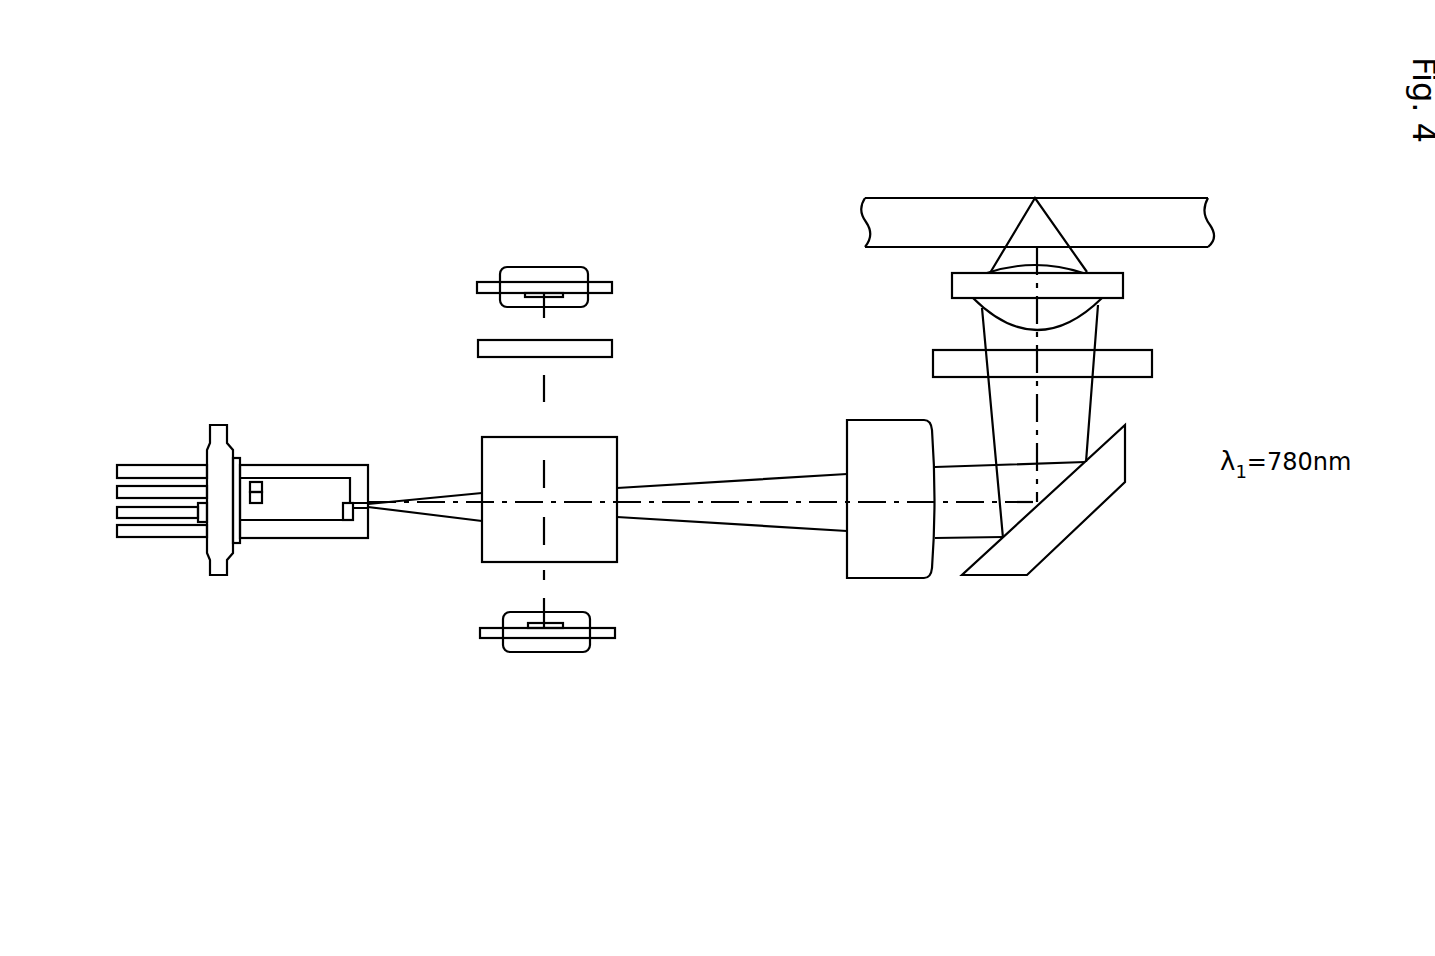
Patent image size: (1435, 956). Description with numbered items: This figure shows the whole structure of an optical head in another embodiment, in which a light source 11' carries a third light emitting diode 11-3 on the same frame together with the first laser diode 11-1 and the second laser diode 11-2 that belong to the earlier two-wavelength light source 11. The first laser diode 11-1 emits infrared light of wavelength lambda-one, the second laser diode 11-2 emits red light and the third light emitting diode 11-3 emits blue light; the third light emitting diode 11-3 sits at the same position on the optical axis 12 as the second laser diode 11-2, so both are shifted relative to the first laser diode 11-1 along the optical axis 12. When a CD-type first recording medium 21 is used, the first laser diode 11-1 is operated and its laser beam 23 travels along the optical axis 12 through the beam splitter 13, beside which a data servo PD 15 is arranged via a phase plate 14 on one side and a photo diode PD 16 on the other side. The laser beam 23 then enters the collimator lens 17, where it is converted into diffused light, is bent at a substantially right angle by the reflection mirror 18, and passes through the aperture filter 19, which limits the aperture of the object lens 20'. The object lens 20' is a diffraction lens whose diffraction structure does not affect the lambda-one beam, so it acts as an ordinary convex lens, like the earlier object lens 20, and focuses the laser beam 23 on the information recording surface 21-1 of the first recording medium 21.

The light source 11 is at (242, 533).
The light source 11' is at (242, 533).
The first laser diode 11-1 is at (346, 522).
The second laser diode 11-2 is at (256, 482).
The third light emitting diode 11-3 is at (256, 503).
The optical axis 12 is at (727, 497).
The beam splitter 13 is at (617, 463).
The phase plate 14 is at (590, 357).
The data servo PD 15 is at (590, 300).
The photo diode PD 16 is at (600, 640).
The collimator lens 17 is at (872, 420).
The reflection mirror 18 is at (1073, 517).
The aperture filter 19 is at (1152, 355).
The objective lens 20 is at (1082, 297).
The object lens 20' is at (1082, 297).
The first recording medium 21 is at (1209, 212).
The information recording surface 21-1 is at (1080, 198).
The laser beam 23 is at (1073, 402).